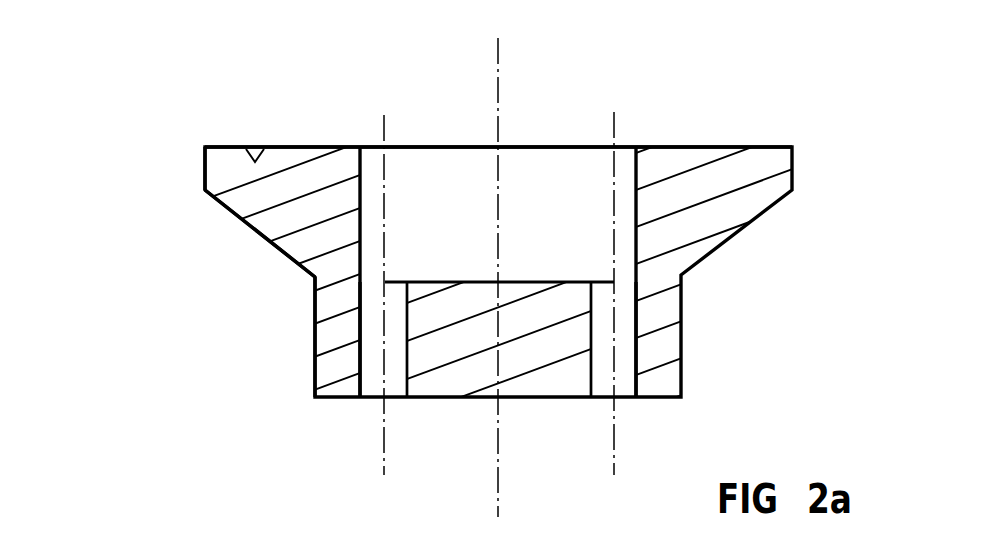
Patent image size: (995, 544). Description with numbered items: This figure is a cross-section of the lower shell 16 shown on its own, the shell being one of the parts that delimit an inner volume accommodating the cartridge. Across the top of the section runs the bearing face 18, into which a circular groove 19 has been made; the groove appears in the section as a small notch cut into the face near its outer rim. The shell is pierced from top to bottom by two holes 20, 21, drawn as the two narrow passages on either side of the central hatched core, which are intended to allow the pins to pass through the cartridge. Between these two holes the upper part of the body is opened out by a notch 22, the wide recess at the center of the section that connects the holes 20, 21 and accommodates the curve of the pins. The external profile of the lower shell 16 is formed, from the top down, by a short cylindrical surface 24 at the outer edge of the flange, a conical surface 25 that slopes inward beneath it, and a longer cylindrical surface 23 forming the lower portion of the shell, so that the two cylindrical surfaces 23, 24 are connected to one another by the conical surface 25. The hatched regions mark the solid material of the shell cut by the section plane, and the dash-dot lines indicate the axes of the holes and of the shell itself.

The lower shell 16 is at (705, 212).
The bearing face 18 is at (340, 147).
The circular groove 19 is at (747, 147).
The hole 20 is at (372, 385).
The hole 21 is at (620, 377).
The notch 22 is at (528, 217).
The cylindrical surface 23 is at (301, 346).
The cylindrical surface 24 is at (203, 170).
The conical surface 25 is at (252, 235).